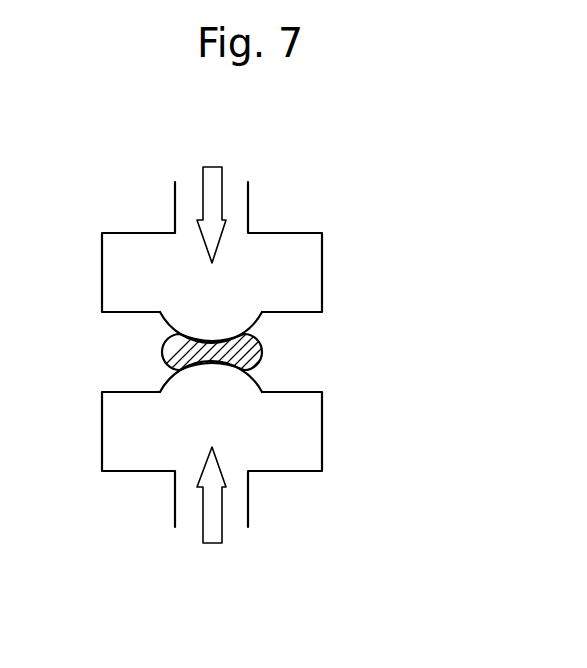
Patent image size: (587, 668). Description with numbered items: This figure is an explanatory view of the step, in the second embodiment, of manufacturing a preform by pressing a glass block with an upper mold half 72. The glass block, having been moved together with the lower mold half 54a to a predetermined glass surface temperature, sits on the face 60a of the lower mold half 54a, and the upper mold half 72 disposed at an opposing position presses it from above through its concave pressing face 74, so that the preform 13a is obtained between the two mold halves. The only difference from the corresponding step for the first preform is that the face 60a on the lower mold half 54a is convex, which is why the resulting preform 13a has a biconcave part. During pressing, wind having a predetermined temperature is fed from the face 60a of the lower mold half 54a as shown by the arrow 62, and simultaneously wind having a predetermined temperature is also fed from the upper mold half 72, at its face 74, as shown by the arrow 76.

The upper mold half 72 is at (315, 270).
The upper die pressing surface 74 is at (208, 340).
The arrow 76 is at (210, 180).
The preform 13a is at (168, 353).
The lower mold half 54a is at (305, 433).
The face 60a is at (253, 378).
The arrow 62 is at (212, 535).